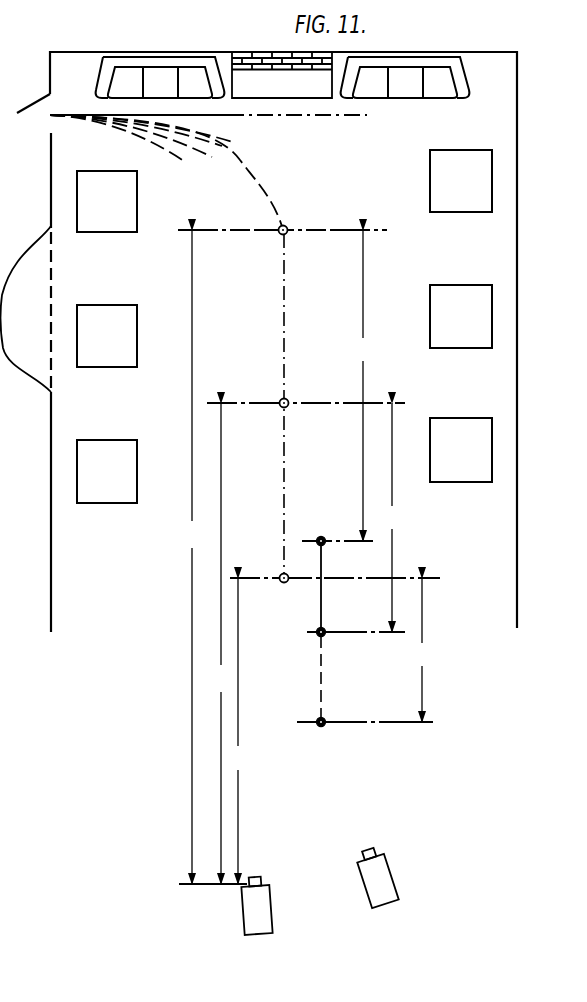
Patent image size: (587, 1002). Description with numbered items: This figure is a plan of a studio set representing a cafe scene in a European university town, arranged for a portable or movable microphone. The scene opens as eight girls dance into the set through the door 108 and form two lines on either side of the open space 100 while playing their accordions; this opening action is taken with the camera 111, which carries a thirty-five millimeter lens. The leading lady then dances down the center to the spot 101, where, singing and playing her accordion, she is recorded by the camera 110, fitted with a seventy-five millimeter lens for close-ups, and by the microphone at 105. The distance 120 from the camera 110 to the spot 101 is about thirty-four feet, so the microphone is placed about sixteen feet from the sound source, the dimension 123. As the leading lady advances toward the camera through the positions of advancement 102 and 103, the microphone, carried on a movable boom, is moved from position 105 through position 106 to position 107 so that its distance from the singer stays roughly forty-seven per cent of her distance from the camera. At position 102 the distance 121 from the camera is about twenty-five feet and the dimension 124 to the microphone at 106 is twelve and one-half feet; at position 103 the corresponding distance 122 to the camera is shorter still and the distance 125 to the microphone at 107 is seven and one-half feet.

The open space 100 is at (209, 159).
The spot 101 is at (287, 234).
The position of advancement 102 is at (288, 407).
The position of advancement 103 is at (281, 582).
The microphone position 105 is at (323, 537).
The microphone position 106 is at (325, 636).
The microphone position 107 is at (324, 726).
The door 108 is at (29, 116).
The camera 110 is at (273, 902).
The camera 111 is at (390, 877).
The distance 120 is at (194, 557).
The distance 121 is at (220, 643).
The distance from third position to baseline 122 is at (241, 731).
The dimension 123 is at (364, 385).
The dimension 124 is at (391, 517).
The distance 125 is at (421, 650).